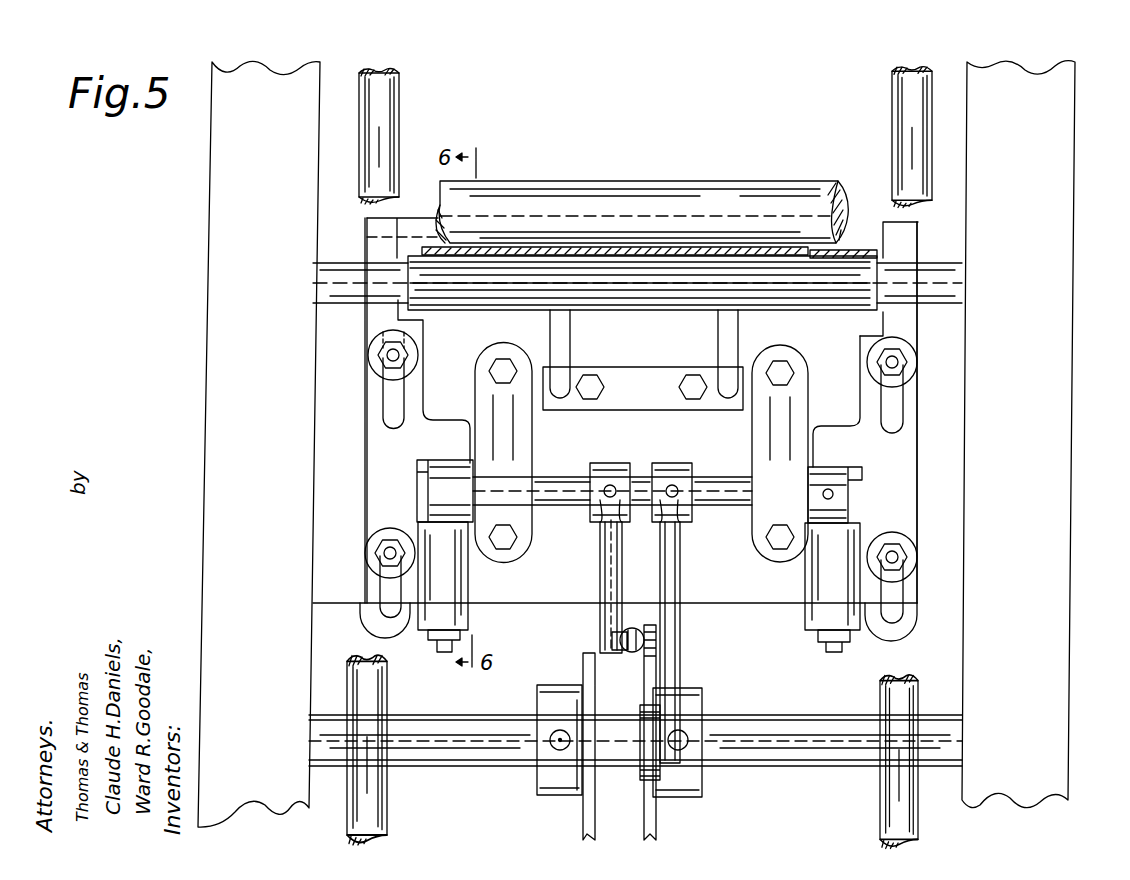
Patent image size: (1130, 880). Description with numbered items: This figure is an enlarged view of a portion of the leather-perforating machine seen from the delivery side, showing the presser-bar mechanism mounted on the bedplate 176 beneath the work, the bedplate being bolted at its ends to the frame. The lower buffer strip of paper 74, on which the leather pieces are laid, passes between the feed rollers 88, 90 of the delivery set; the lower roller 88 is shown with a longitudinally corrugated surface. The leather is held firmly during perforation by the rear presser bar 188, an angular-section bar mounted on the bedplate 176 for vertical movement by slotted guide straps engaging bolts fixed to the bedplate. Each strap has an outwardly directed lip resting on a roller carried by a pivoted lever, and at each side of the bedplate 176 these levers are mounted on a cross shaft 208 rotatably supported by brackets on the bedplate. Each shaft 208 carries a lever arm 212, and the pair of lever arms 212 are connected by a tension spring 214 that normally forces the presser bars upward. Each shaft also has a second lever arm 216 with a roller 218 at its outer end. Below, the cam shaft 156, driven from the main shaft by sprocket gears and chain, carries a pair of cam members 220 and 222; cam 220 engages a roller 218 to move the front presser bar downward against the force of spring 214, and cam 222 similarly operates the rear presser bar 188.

The buffer strip of paper 74 is at (660, 245).
The feed roller 88 is at (847, 303).
The feed roller 90 is at (745, 190).
The shaft 156 is at (832, 722).
The bedplate 176 is at (520, 596).
The rear presser bar 188 is at (413, 226).
The cross shaft 208 is at (568, 478).
The lever arm 212 is at (603, 560).
The tension spring 214 is at (628, 628).
The second lever arm 216 is at (674, 586).
The roller 218 is at (650, 710).
The cam member 220 is at (583, 822).
The cam member 222 is at (656, 826).